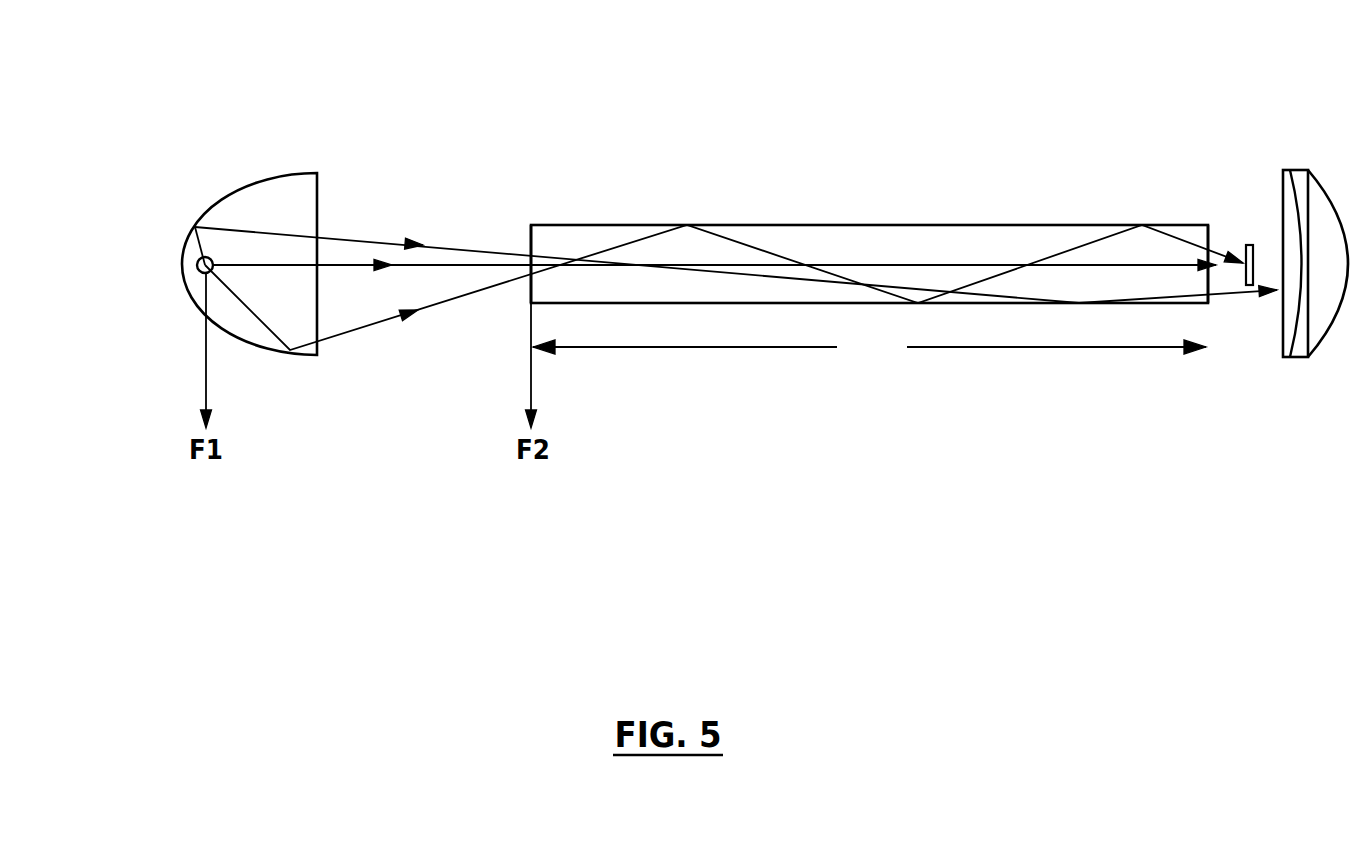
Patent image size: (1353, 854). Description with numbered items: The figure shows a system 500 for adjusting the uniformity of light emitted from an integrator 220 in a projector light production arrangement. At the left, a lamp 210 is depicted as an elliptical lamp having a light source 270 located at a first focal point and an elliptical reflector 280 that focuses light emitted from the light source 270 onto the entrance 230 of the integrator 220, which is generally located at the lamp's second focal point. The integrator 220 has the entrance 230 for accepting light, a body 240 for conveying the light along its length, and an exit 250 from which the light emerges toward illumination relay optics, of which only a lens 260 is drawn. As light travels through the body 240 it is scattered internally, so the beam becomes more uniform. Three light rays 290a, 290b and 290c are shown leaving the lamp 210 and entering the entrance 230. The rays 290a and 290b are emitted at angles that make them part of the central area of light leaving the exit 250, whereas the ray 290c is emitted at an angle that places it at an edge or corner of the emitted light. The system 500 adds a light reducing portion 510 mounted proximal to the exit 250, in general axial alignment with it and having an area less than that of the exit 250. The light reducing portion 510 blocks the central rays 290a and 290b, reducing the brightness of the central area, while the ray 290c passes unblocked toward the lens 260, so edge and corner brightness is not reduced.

The lamp 210 is at (242, 153).
The integrator 220 is at (600, 212).
The entrance 230 is at (530, 288).
The body 240 is at (869, 350).
The exit 250 is at (1210, 237).
The lens 260 is at (1297, 168).
The light source 270 is at (187, 265).
The elliptical reflector 280 is at (203, 218).
The light ray 290a is at (413, 313).
The light ray 290b is at (381, 268).
The light ray 290c is at (416, 236).
The system 500 is at (252, 625).
The light reducing portion 510 is at (1248, 243).